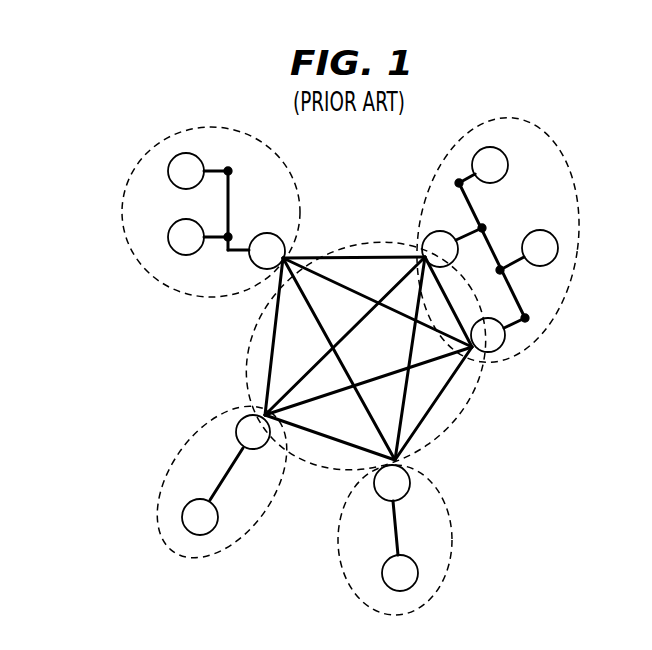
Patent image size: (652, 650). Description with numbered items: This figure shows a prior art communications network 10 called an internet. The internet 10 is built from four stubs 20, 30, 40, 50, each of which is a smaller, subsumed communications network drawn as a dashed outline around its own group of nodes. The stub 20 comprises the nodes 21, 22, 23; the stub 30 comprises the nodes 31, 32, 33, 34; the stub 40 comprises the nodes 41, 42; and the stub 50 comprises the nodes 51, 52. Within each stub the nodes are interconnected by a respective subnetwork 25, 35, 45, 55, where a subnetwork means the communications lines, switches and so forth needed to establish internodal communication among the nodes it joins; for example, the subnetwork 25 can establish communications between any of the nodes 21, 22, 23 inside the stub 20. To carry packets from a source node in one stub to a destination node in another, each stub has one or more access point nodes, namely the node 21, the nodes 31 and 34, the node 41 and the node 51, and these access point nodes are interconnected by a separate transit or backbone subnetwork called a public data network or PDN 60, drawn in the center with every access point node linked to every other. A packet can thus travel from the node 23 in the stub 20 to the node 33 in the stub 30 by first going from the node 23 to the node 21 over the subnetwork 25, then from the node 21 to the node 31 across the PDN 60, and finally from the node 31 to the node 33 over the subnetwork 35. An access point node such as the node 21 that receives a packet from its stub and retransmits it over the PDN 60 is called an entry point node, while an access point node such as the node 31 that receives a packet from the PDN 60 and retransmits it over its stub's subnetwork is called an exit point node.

The communications network 10 is at (214, 329).
The stub 20 is at (157, 148).
The node 21 is at (267, 251).
The node 22 is at (186, 171).
The node 23 is at (186, 237).
The subnetwork 25 is at (240, 213).
The stub 30 is at (566, 193).
The node 31 is at (440, 249).
The node 32 is at (490, 165).
The node 33 is at (540, 248).
The node 34 is at (488, 335).
The subnetwork 35 is at (493, 230).
The stub 40 is at (445, 528).
The node 41 is at (392, 483).
The node 42 is at (400, 573).
The subnetwork 45 is at (405, 538).
The stub 50 is at (238, 545).
The node 51 is at (253, 432).
The node 52 is at (200, 517).
The subnetwork 55 is at (242, 460).
The public data network 60 is at (448, 412).